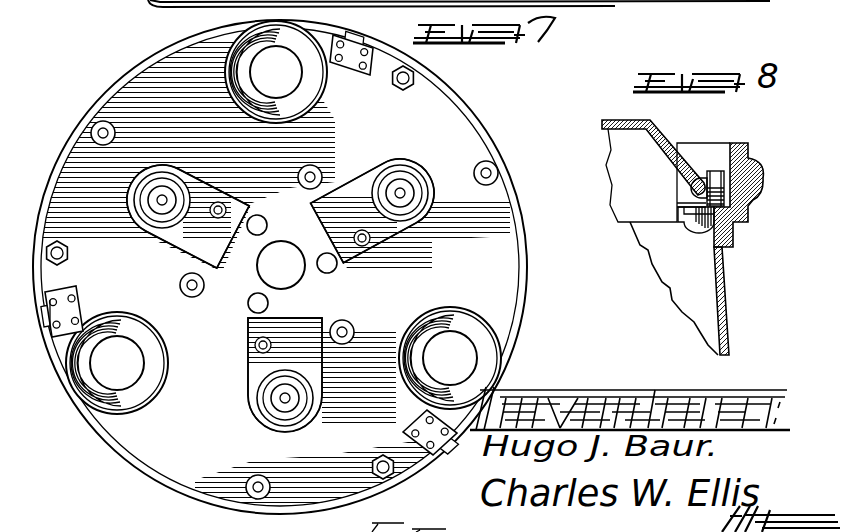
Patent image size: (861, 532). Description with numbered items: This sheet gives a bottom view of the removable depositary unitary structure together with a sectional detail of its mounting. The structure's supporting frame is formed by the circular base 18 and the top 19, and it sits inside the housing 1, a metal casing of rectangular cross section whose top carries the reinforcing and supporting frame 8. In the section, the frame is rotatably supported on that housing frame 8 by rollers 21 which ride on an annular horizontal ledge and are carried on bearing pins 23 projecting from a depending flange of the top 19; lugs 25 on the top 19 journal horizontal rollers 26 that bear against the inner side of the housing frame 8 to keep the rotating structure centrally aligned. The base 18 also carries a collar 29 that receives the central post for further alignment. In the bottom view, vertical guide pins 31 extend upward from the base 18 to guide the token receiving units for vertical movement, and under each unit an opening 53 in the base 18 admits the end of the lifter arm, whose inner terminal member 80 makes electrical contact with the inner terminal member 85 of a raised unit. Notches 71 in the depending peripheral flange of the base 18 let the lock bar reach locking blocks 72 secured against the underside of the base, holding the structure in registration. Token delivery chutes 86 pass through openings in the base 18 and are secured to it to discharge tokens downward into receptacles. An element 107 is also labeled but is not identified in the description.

In FIG. 8, the casing or housing 1 is at (726, 318).
In FIG. 8, the reinforcing and supporting frame 8 is at (736, 213).
In FIG. 7, the circular base 18 is at (170, 455).
In FIG. 8, the top 19 is at (641, 122).
In FIG. 8, the rollers 21 is at (716, 172).
In FIG. 8, the bearing pins 23 is at (698, 186).
In FIG. 8, the lugs 25 is at (682, 196).
In FIG. 8, the horizontal rollers 26 is at (700, 228).
In FIG. 8, the collar 29 is at (684, 208).
In FIG. 7, the vertical guide pins 31 is at (492, 170).
In FIG. 7, the opening 53 is at (213, 197).
In FIG. 7, the notches 71 is at (358, 34).
In FIG. 7, the locking block 72 is at (78, 303).
In FIG. 7, the inner terminal member 80 is at (408, 190).
In FIG. 7, the inner terminal member 85 is at (386, 201).
In FIG. 7, the token delivery chute 86 is at (148, 395).
In FIG. 7, the opening 107 is at (259, 226).